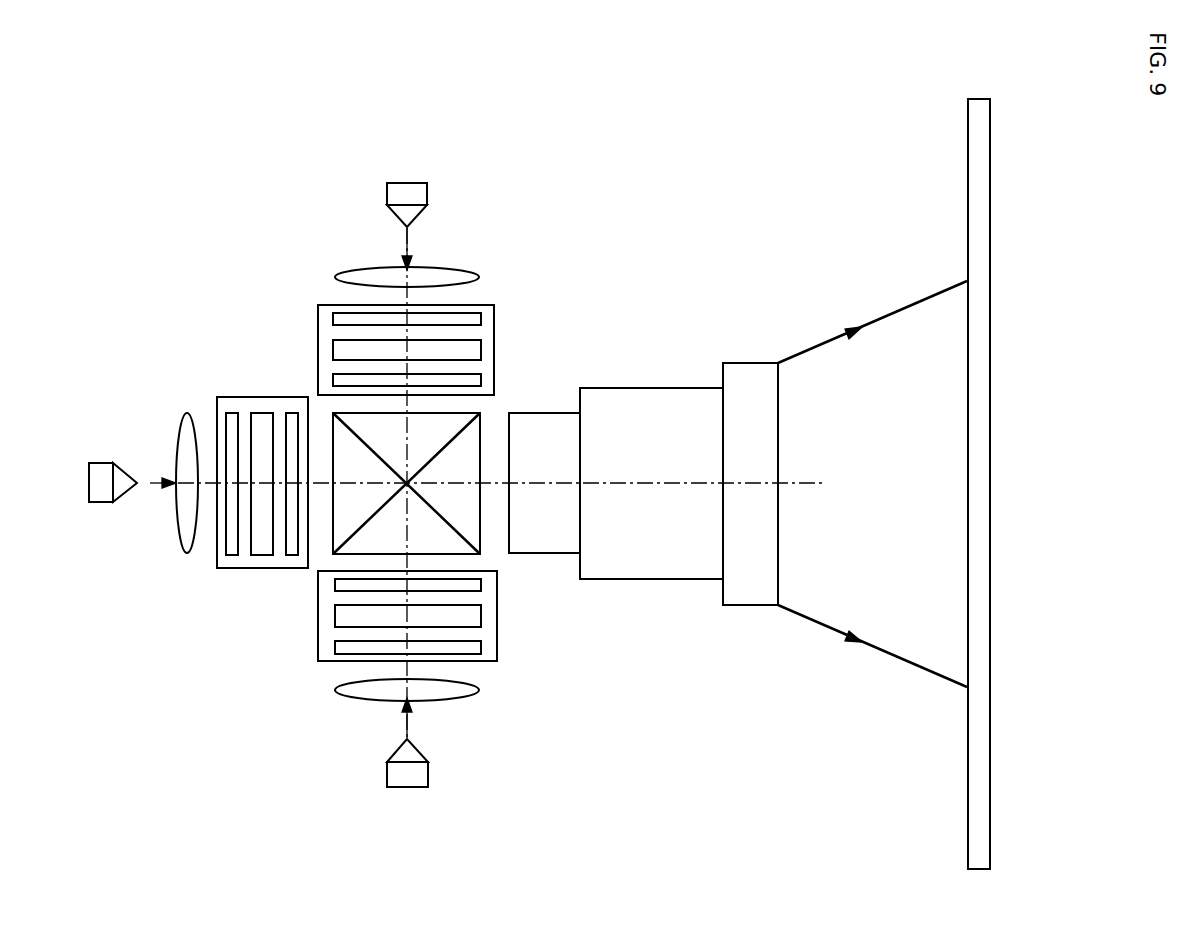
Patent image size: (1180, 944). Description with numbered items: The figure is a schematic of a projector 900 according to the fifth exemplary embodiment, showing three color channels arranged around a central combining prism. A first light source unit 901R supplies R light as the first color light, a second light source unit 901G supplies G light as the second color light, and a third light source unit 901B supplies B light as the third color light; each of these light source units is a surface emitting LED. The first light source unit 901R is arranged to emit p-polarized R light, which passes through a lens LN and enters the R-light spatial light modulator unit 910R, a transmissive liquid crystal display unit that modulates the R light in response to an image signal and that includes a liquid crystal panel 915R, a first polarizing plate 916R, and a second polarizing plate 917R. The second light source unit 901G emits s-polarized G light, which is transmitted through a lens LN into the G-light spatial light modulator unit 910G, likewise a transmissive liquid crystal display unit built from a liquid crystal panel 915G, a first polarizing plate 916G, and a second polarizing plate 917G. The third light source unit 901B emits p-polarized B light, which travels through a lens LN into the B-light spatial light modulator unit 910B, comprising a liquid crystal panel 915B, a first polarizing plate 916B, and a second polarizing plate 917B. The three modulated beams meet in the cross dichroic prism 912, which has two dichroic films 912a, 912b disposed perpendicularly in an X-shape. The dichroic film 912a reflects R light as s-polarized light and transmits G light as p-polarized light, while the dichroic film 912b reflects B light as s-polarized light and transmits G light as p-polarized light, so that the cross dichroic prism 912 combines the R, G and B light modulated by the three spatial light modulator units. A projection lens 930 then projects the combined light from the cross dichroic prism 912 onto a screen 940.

The projector 900 is at (742, 178).
The second light source unit 901G is at (130, 469).
The first light source unit 901R is at (415, 218).
The third light source unit 901B is at (420, 752).
The lens LN is at (178, 520).
The G-light spatial light modulator unit 910G is at (213, 399).
The R-light spatial light modulator unit 910R is at (509, 320).
The B-light spatial light modulator unit 910B is at (501, 664).
The liquid crystal panel 915G is at (262, 412).
The first polarizing plate 916G is at (230, 412).
The second polarizing plate 917G is at (292, 412).
The liquid crystal panel 915R is at (481, 350).
The first polarizing plate 916R is at (481, 319).
The second polarizing plate 917R is at (481, 381).
The liquid crystal panel 915B is at (481, 616).
The first polarizing plate 916B is at (481, 648).
The second polarizing plate 917B is at (481, 585).
The cross dichroic prism 912 is at (472, 513).
The dichroic film 912a is at (478, 532).
The dichroic film 912b is at (355, 540).
The projection lens 930 is at (752, 605).
The screen 940 is at (967, 772).